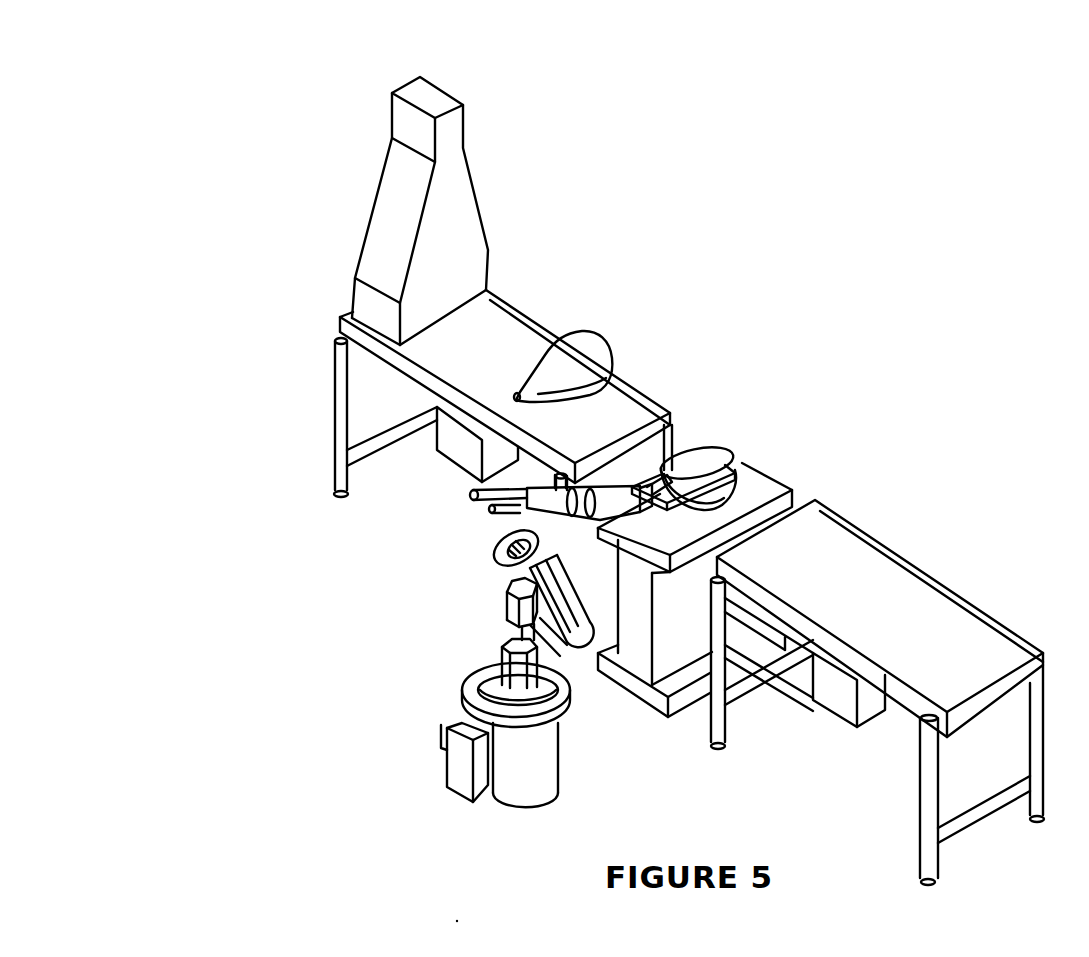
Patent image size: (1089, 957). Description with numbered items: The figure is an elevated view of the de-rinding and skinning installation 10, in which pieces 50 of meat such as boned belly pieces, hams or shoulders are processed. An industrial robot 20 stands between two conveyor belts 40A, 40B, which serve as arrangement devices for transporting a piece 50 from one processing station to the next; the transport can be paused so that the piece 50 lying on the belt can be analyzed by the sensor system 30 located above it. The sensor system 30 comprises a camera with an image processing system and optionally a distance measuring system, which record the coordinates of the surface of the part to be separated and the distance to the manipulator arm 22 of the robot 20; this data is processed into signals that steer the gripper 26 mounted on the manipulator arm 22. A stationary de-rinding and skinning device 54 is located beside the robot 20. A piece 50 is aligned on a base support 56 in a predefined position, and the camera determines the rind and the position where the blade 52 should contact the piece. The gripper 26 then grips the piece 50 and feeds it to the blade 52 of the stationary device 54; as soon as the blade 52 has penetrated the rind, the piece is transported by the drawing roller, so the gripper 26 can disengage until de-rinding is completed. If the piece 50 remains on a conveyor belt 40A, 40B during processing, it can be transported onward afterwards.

The automated processing system 10 is at (318, 201).
The industrial robot 20 is at (531, 529).
The manipulator arm 22 is at (510, 533).
The gripper 26 is at (672, 465).
The sensor system 30 is at (468, 167).
The conveyor belt 40A is at (482, 345).
The conveyor belt 40B is at (883, 593).
The piece 50 is at (728, 387).
The blade 52 is at (750, 467).
The stationary de-rinding and skinning device 54 is at (713, 515).
The base support 56 is at (747, 512).